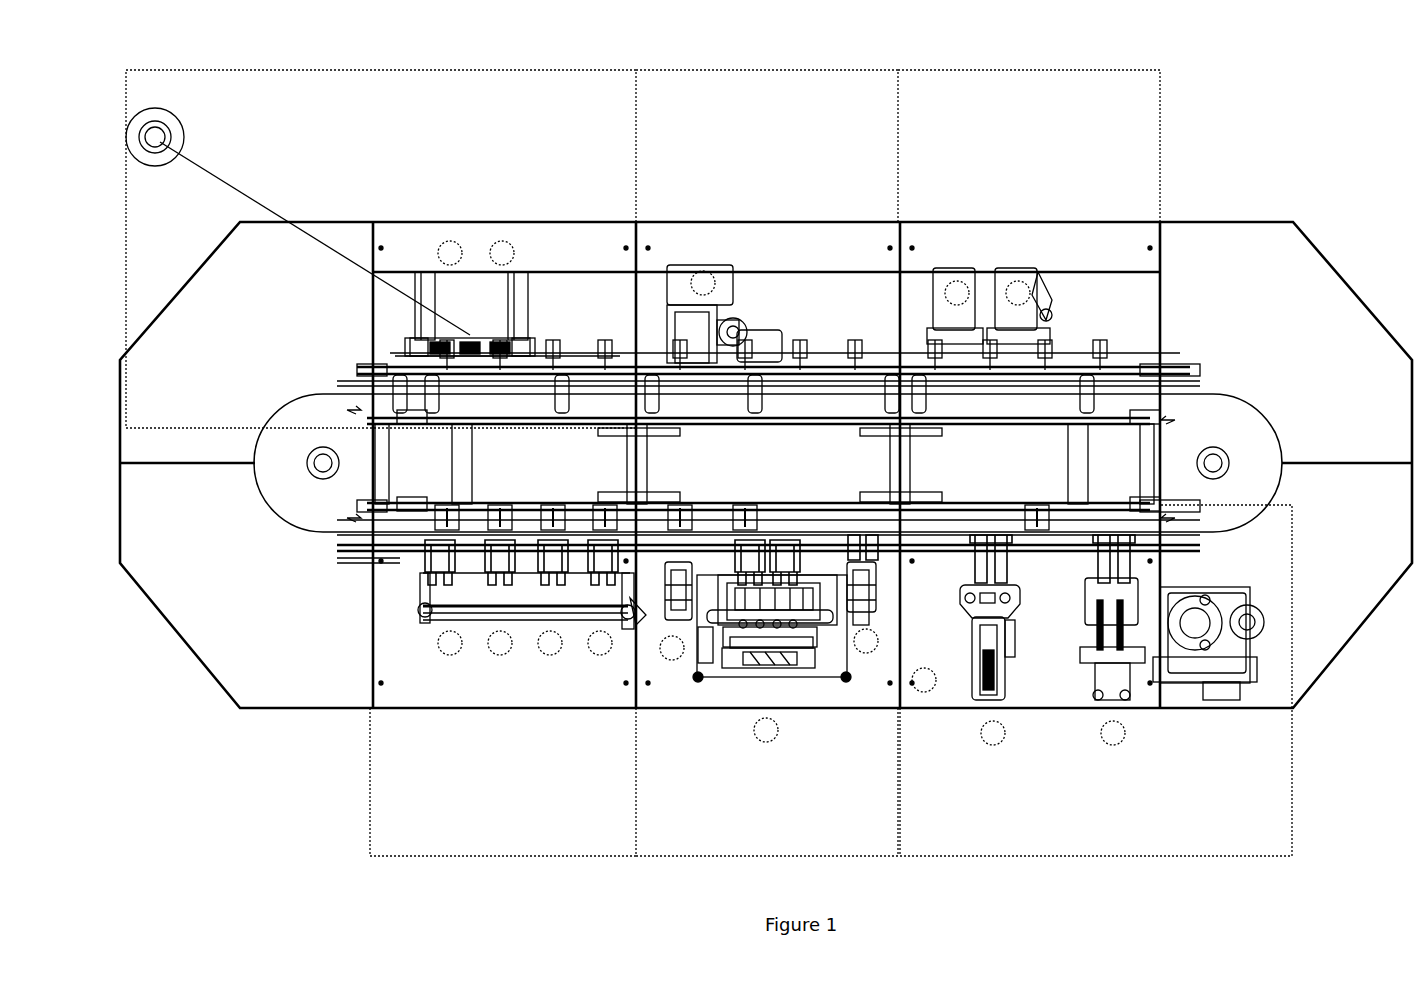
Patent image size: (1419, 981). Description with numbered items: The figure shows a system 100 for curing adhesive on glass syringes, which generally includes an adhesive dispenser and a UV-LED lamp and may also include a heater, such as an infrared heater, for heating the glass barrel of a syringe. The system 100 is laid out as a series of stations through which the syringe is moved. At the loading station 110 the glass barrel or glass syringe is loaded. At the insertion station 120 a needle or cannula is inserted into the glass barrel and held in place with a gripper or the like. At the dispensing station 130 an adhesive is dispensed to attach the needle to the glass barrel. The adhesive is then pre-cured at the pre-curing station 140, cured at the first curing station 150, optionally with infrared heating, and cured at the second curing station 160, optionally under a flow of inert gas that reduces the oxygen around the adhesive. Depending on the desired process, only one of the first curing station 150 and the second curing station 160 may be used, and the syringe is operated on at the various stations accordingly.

The system 100 is at (1287, 130).
The loading station 110 is at (465, 856).
The insertion station 120 is at (735, 856).
The dispensing station 130 is at (1003, 856).
The pre-curing station 140 is at (1015, 70).
The first curing station 150 is at (735, 70).
The second curing station 160 is at (368, 70).